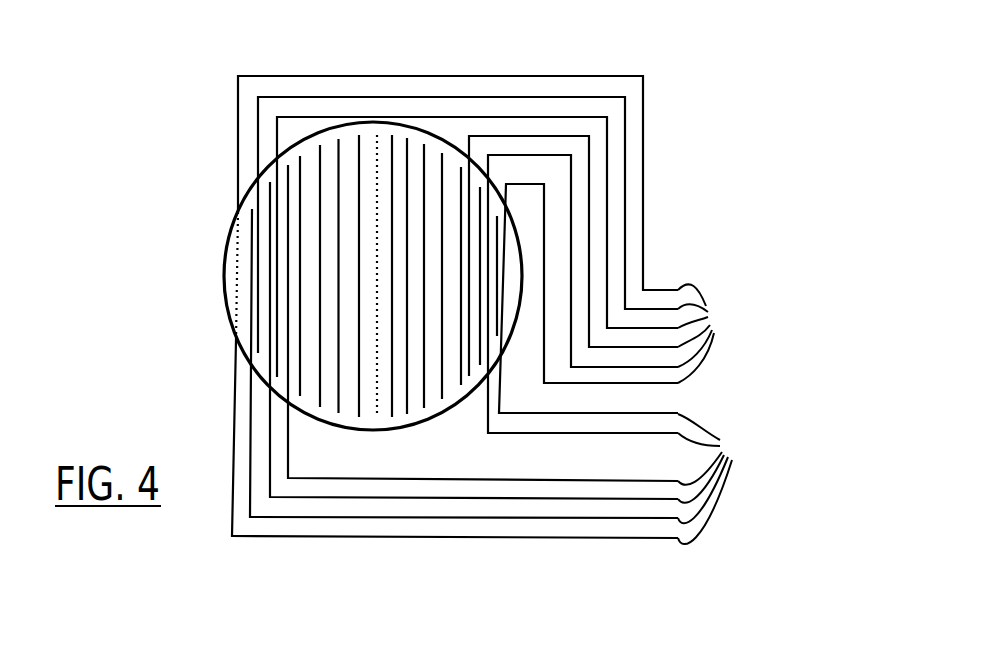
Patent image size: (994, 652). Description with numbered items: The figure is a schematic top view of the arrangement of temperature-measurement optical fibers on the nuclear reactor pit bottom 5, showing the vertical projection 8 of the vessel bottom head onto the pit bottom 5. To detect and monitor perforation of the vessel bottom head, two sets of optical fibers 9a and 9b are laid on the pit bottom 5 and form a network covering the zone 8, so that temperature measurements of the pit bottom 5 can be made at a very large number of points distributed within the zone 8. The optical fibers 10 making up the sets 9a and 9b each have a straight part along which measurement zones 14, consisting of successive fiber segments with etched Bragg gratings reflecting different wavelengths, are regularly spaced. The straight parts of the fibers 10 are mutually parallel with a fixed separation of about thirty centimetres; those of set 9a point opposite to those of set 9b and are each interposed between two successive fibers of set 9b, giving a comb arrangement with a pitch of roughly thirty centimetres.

The optical fibers 10 is at (408, 76).
The measurement zones 14 is at (237, 258).
The vertical projection of the vessel bottom head 8 is at (232, 324).
The first set of optical fibers 9a is at (716, 479).
The second set of optical fibers 9b is at (710, 333).
The nuclear reactor pit bottom 5 is at (228, 523).